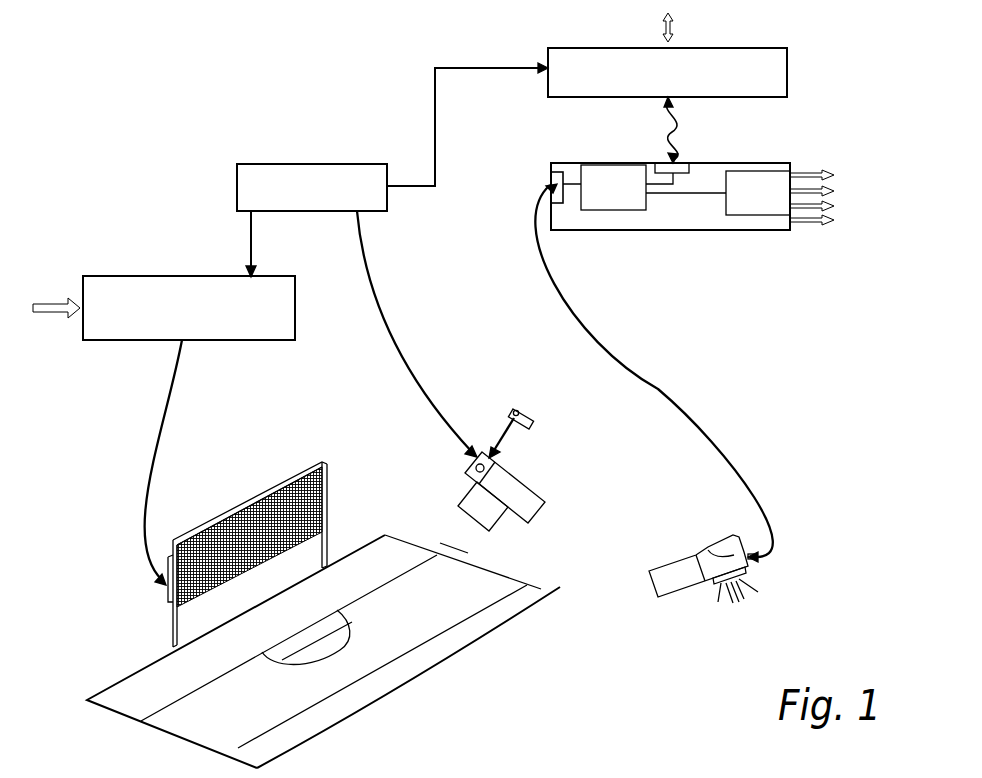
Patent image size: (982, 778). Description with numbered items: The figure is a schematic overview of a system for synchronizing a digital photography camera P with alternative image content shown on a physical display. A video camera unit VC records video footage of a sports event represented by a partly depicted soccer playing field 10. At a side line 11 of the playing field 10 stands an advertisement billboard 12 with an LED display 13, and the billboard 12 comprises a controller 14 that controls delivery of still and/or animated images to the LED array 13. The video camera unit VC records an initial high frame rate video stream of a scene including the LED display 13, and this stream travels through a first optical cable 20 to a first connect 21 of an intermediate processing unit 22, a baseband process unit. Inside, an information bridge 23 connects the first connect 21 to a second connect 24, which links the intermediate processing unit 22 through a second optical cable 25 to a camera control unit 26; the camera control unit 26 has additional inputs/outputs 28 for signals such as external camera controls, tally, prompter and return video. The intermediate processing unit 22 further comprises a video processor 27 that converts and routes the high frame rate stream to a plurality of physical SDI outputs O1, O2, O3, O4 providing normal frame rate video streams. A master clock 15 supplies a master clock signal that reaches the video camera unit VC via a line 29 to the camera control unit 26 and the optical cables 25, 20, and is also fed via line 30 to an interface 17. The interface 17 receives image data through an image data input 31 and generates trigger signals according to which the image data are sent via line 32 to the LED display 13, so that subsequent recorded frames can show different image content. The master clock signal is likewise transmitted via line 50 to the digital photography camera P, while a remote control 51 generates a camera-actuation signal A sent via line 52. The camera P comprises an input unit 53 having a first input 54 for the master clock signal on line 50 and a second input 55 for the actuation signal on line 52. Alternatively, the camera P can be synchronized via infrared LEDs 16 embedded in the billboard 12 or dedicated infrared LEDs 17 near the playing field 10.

The soccer playing field 10 is at (309, 651).
The side line 11 is at (123, 676).
The advertisement billboard 12 is at (237, 533).
The LED display 13 is at (313, 507).
The controller 14 is at (167, 597).
The master clock 15 is at (257, 172).
The infrared LEDs 16 is at (307, 474).
The interface 17 is at (160, 285).
The first optical cable 20 is at (638, 363).
The first connect 21 is at (552, 180).
The intermediate processing unit 22 is at (703, 220).
The information bridge 23 is at (623, 200).
The second connect 24 is at (683, 165).
The second optical cable 25 is at (664, 133).
The camera control unit 26 is at (768, 65).
The video processor 27 is at (763, 203).
The inputs/outputs 28 is at (676, 25).
The line 29 is at (452, 68).
The line 30 is at (253, 242).
The image data input 31 is at (53, 307).
The line 32 is at (172, 414).
The line 50 is at (387, 320).
The remote control 51 is at (533, 422).
The line 52 is at (503, 438).
The input unit 53 is at (465, 474).
The first input 54 is at (469, 457).
The second input 55 is at (483, 452).
The SDI output O1 is at (811, 173).
The SDI output O2 is at (819, 183).
The SDI output O3 is at (824, 210).
The SDI output O4 is at (818, 223).
The camera-actuation signal A is at (519, 442).
The digital photography camera P is at (515, 490).
The video camera unit VC is at (681, 567).